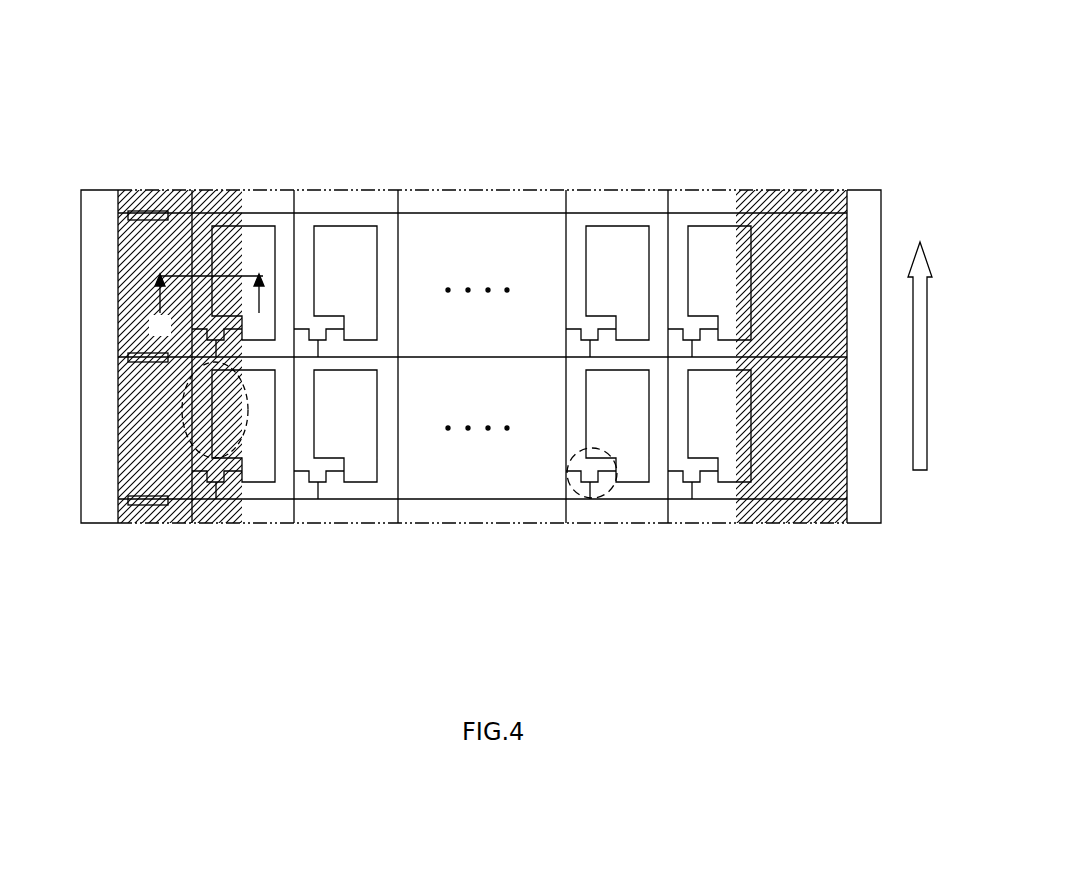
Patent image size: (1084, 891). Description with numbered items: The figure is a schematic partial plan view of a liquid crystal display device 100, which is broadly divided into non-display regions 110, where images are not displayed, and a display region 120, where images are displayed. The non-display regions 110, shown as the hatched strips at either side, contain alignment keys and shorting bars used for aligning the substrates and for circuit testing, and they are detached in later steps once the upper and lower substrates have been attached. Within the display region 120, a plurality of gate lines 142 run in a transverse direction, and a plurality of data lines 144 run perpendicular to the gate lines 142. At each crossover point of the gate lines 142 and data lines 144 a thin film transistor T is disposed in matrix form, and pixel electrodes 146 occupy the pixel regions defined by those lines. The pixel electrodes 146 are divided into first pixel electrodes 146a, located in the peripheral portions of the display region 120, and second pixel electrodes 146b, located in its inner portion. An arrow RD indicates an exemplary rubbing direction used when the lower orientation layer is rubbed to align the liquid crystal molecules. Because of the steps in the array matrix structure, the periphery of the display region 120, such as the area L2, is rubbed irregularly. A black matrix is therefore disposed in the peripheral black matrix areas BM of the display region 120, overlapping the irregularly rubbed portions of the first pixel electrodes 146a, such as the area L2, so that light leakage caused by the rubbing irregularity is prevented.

The liquid crystal display device 100 is at (657, 125).
The non-display regions 110 is at (100, 207).
The display region 120 is at (847, 189).
The gate lines 142 is at (460, 500).
The data lines 144 is at (567, 450).
The pixel electrodes 146 is at (482, 434).
The first pixel electrodes 146a is at (257, 478).
The second pixel electrodes 146b is at (365, 478).
The irregularly rubbed area L2 is at (185, 457).
The thin film transistor T is at (577, 450).
The black matrix areas BM is at (847, 524).
The rubbing direction RD is at (920, 470).